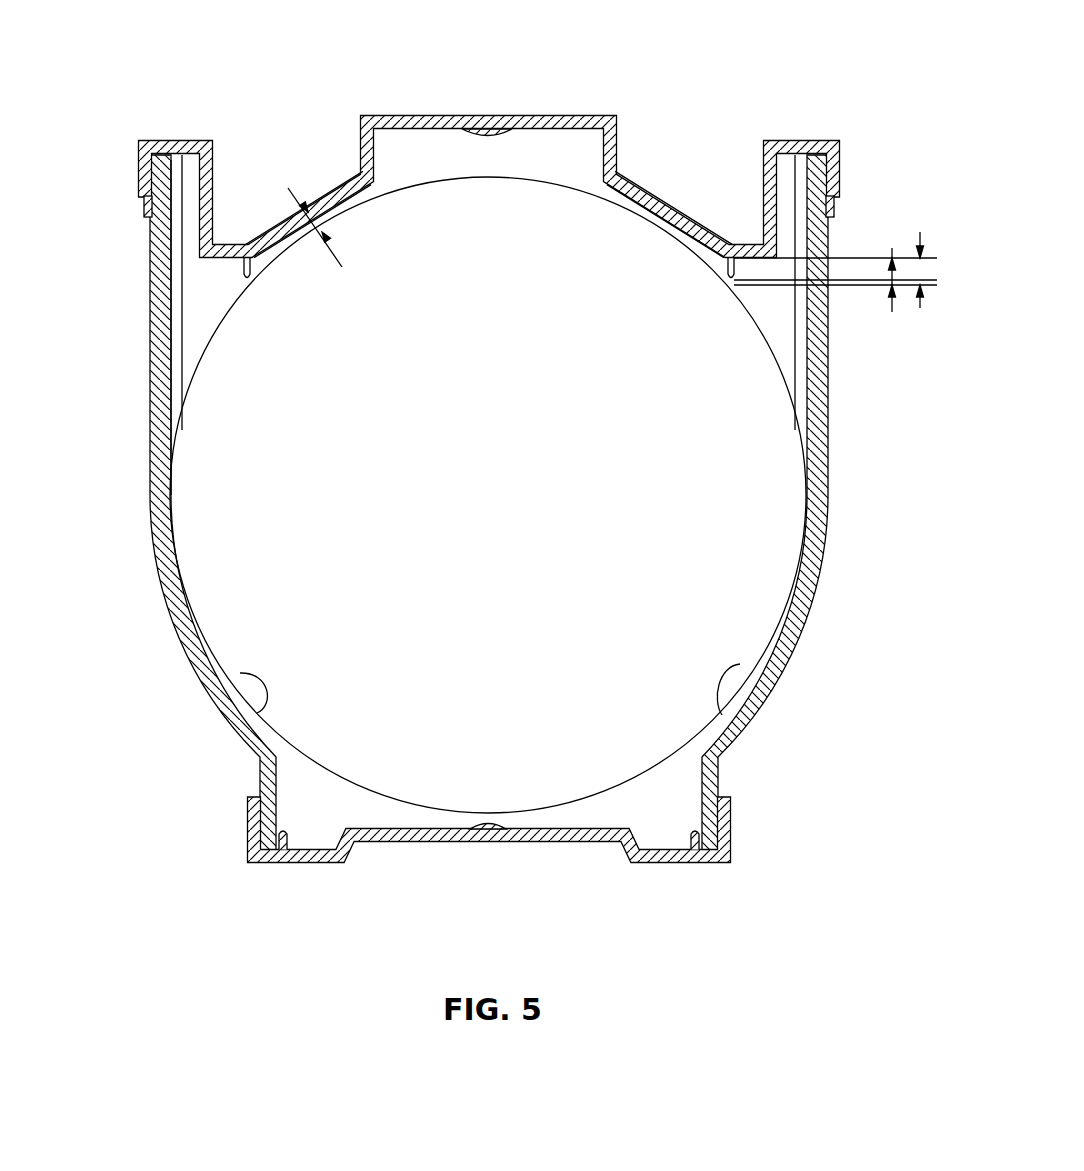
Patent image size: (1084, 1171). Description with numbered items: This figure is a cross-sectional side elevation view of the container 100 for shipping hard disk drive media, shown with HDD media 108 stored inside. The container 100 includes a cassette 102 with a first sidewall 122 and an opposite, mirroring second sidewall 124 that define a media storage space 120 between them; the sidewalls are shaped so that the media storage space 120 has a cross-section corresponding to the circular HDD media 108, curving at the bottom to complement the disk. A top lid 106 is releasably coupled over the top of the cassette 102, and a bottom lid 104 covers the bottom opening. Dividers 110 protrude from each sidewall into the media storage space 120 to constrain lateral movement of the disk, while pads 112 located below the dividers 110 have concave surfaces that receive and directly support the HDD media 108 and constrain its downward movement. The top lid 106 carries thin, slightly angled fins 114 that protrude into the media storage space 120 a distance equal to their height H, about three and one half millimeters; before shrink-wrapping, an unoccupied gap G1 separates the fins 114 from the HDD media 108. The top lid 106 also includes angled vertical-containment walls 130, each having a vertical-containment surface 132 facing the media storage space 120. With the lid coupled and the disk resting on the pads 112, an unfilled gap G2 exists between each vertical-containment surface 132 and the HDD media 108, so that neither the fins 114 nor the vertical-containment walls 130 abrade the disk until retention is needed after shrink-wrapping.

The container 100 is at (797, 25).
The cassette 102 is at (148, 437).
The bottom lid 104 is at (256, 864).
The top lid 106 is at (567, 108).
The HDD media 108 is at (217, 328).
The divider 110 is at (176, 368).
The pad 112 is at (240, 673).
The fin 114 is at (245, 262).
The media storage space 120 is at (507, 518).
The first sidewall 122 is at (178, 572).
The second sidewall 124 is at (815, 505).
The vertical-containment wall 130 is at (332, 190).
The vertical-containment surface 132 is at (318, 247).
The gap G1 is at (892, 312).
The gap G2 is at (300, 180).
The height H is at (921, 235).